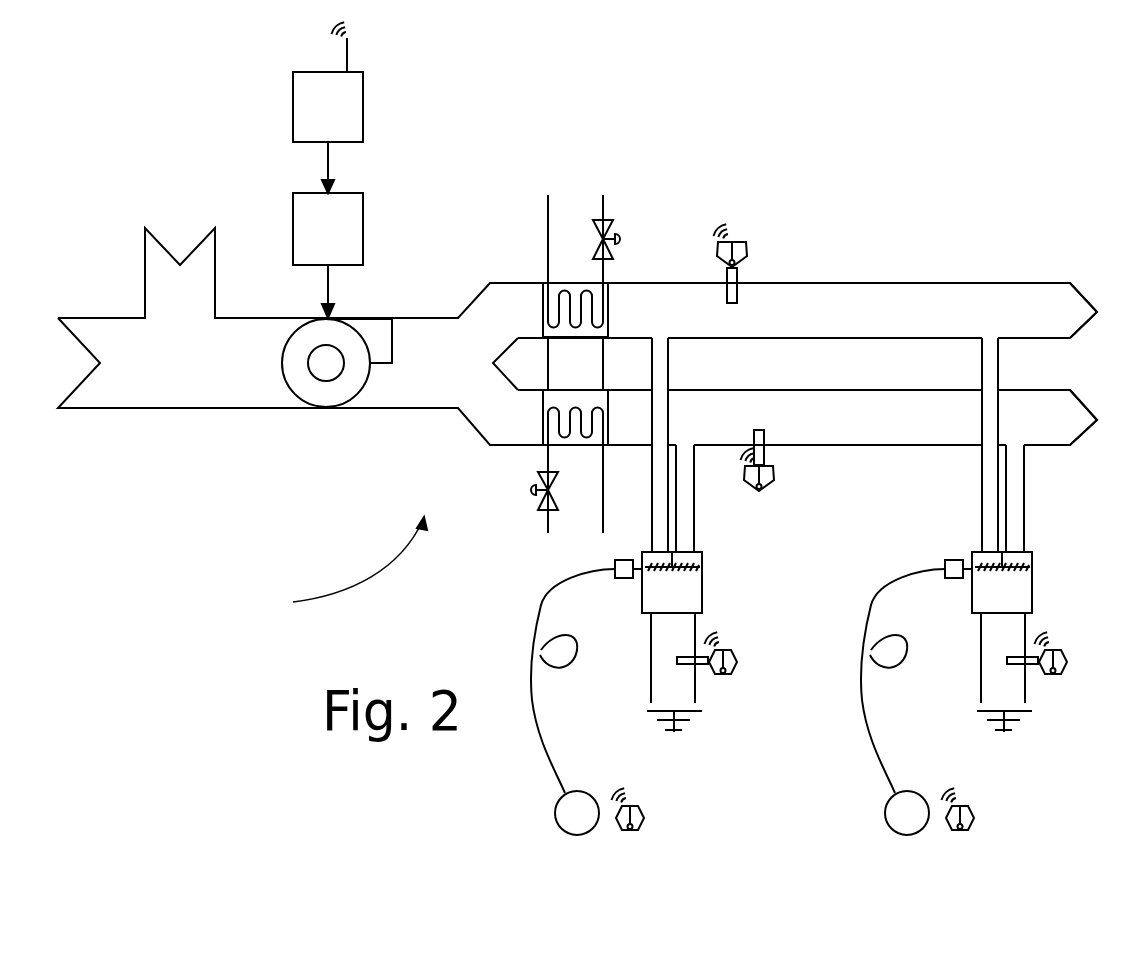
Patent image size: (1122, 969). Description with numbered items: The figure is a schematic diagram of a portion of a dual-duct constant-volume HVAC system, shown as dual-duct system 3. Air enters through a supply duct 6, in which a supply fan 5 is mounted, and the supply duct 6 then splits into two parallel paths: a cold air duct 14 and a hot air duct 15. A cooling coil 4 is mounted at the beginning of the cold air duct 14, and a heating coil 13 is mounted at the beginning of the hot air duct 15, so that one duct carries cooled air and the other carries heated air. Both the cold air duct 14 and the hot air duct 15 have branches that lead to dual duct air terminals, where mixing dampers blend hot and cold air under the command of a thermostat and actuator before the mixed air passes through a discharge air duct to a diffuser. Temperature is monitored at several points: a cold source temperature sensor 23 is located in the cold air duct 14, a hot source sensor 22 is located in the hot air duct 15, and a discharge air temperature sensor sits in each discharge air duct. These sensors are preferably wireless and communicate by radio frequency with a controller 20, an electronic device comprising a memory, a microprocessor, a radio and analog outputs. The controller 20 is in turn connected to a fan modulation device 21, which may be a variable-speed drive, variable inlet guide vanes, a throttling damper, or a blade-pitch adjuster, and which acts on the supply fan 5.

The dual-duct system 3 is at (343, 568).
The cooling coil 4 is at (543, 298).
The supply fan 5 is at (290, 335).
The supply duct 6 is at (398, 410).
The heating coil 13 is at (543, 423).
The cold air duct 14 is at (845, 283).
The hot air duct 15 is at (840, 448).
The controller 20 is at (363, 103).
The fan modulation device 21 is at (363, 213).
The hot source sensor 22 is at (774, 485).
The cold source temperature sensor 23 is at (740, 242).